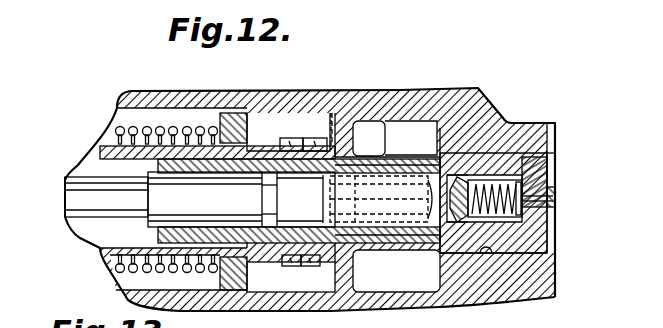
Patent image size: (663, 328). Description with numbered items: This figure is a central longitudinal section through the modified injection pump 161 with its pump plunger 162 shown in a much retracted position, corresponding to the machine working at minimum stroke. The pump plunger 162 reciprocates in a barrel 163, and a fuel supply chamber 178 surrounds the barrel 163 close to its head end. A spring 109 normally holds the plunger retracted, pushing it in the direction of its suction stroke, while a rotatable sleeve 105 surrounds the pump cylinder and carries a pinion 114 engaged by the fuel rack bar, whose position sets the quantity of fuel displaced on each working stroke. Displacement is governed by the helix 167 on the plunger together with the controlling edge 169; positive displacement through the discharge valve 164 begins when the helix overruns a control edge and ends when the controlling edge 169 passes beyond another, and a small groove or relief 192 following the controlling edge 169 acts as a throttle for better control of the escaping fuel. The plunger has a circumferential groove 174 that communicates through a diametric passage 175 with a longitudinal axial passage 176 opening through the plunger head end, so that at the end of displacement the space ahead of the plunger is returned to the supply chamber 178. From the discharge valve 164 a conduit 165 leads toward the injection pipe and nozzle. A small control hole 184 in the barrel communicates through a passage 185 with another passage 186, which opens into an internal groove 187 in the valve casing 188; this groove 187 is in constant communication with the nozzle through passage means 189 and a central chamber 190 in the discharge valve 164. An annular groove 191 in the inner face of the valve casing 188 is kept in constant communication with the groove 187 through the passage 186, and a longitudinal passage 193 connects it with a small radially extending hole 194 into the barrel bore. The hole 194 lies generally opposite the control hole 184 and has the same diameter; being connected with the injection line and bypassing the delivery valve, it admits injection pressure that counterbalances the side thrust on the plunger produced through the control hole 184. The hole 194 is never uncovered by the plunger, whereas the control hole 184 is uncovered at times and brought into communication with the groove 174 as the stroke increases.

The rotatable sleeve 105 is at (100, 250).
The spring 109 is at (118, 130).
The pinion 114 is at (282, 264).
The injection pump 161 is at (402, 142).
The pump plunger 162 is at (415, 148).
The barrel 163 is at (308, 165).
The discharge valve 164 is at (498, 220).
The conduit 165 is at (553, 200).
The helix 167 is at (428, 228).
The controlling edge 169 is at (351, 160).
The circumferential groove 174 is at (337, 224).
The diametric passage 175 is at (331, 112).
The longitudinal axial passage 176 is at (417, 165).
The fuel supply chamber 178 is at (447, 163).
The control hole 184 is at (360, 233).
The passage 185 is at (433, 255).
The passage 186 is at (455, 238).
The internal groove 187 is at (455, 214).
The valve casing 188 is at (556, 142).
The passage means 189 is at (490, 157).
The central chamber 190 is at (523, 180).
The annular groove 191 is at (455, 155).
The small groove or relief 192 is at (324, 211).
The longitudinal passage 193 is at (388, 177).
The radially extending hole 194 is at (377, 176).